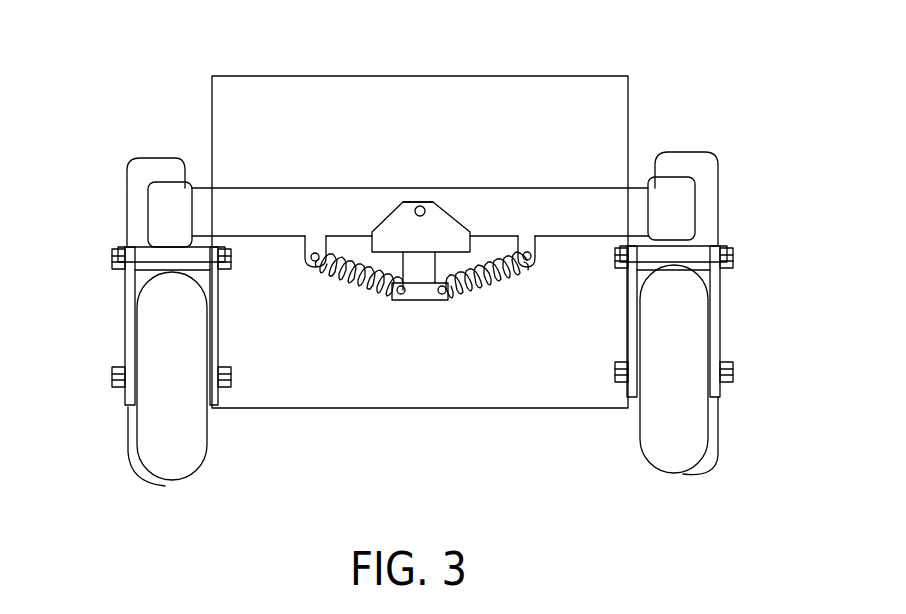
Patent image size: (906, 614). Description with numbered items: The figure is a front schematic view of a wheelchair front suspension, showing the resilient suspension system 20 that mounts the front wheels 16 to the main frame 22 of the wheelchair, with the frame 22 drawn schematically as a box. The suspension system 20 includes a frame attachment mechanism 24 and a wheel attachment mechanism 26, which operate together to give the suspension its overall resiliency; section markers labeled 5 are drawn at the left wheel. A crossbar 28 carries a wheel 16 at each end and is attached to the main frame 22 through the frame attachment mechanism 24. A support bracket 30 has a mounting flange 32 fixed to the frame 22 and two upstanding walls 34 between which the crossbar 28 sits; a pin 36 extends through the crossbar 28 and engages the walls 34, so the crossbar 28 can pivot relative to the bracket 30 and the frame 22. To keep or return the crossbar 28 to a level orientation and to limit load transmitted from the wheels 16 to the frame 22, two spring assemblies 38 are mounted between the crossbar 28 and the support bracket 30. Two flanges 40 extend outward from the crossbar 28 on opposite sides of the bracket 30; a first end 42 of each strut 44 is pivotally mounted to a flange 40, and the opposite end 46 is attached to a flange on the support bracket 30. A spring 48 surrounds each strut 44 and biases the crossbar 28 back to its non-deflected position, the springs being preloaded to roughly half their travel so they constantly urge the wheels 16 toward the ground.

The section line 5- 5 is at (140, 245).
The front wheel 16 is at (167, 440).
The resilient suspension system 20 is at (675, 120).
The main frame 22 is at (535, 92).
The frame attachment mechanism 24 is at (340, 332).
The wheel attachment mechanism 26 is at (92, 262).
The crossbar 28 is at (275, 210).
The support bracket 30 is at (420, 262).
The mounting flange 32 is at (408, 296).
The upstanding wall 34 is at (440, 225).
The pin 36 is at (420, 205).
The spring assembly 38 is at (502, 305).
The flange 40 is at (305, 250).
The first end 42 is at (310, 285).
The strut 44 is at (338, 318).
The opposite end 46 is at (398, 296).
The spring 48 is at (525, 268).